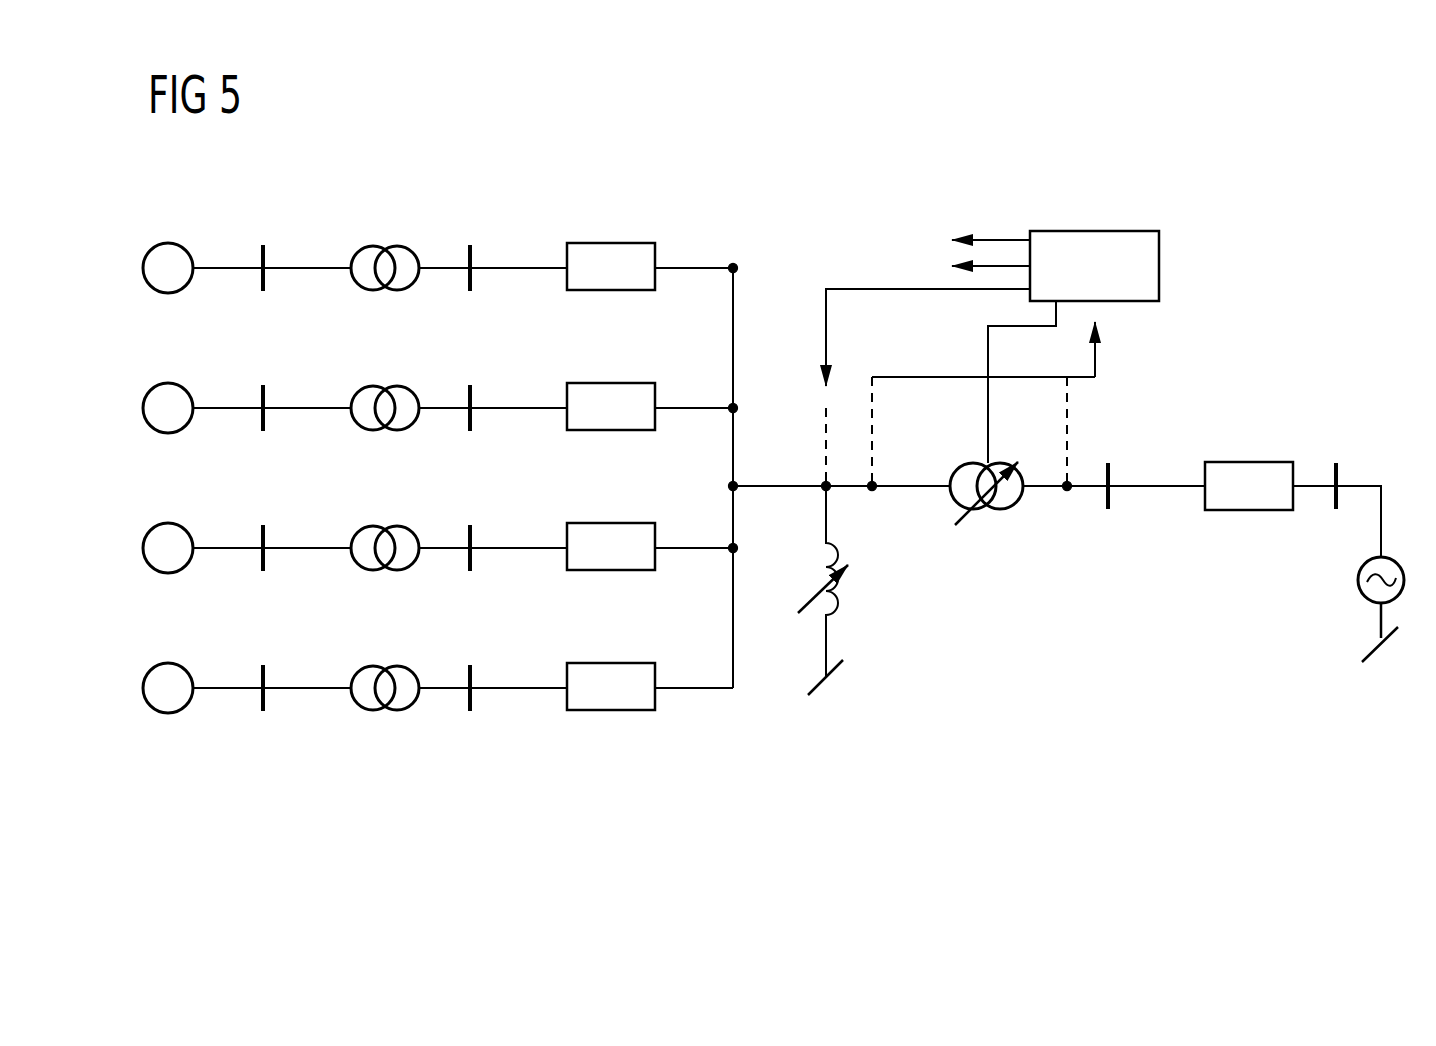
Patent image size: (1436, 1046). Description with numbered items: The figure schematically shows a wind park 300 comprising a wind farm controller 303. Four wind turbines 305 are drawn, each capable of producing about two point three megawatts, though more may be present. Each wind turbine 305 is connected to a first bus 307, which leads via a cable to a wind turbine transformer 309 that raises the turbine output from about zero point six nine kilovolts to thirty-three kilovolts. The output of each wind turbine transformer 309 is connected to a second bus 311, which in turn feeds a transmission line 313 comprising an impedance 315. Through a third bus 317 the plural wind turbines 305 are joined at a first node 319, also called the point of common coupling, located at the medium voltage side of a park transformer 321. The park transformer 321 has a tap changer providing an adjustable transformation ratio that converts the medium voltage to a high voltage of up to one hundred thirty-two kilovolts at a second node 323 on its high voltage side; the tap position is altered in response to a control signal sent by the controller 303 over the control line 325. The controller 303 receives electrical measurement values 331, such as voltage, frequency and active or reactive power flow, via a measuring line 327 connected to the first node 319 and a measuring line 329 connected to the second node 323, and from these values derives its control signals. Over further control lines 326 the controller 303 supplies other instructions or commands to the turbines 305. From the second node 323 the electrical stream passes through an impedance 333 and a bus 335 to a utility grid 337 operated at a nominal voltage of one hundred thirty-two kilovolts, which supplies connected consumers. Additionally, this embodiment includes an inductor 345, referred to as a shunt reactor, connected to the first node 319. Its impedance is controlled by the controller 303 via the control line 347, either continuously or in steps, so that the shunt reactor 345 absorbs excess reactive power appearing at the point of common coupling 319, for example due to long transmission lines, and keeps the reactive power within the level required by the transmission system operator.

The wind park 300 is at (1313, 178).
The controller 303 is at (1095, 231).
The wind turbine 305 is at (168, 243).
The first bus 307 is at (268, 258).
The wind turbine transformer 309 is at (373, 243).
The second bus 311 is at (475, 258).
The transmission line 313 is at (670, 222).
The impedance 315 is at (612, 243).
The third bus 317 is at (735, 260).
The first node 319 is at (740, 492).
The park transformer 321 is at (1000, 512).
The second node 323 is at (1113, 473).
The control line 325 is at (986, 345).
The control lines 326 is at (1007, 267).
The measuring line 327 is at (926, 379).
The measuring line 329 is at (1070, 417).
The electrical measurement values 331 is at (1100, 303).
The impedance 333 is at (1250, 462).
The bus 335 is at (1341, 473).
The utility grid 337 is at (1356, 578).
The inductor 345 is at (840, 610).
The control line 347 is at (877, 288).